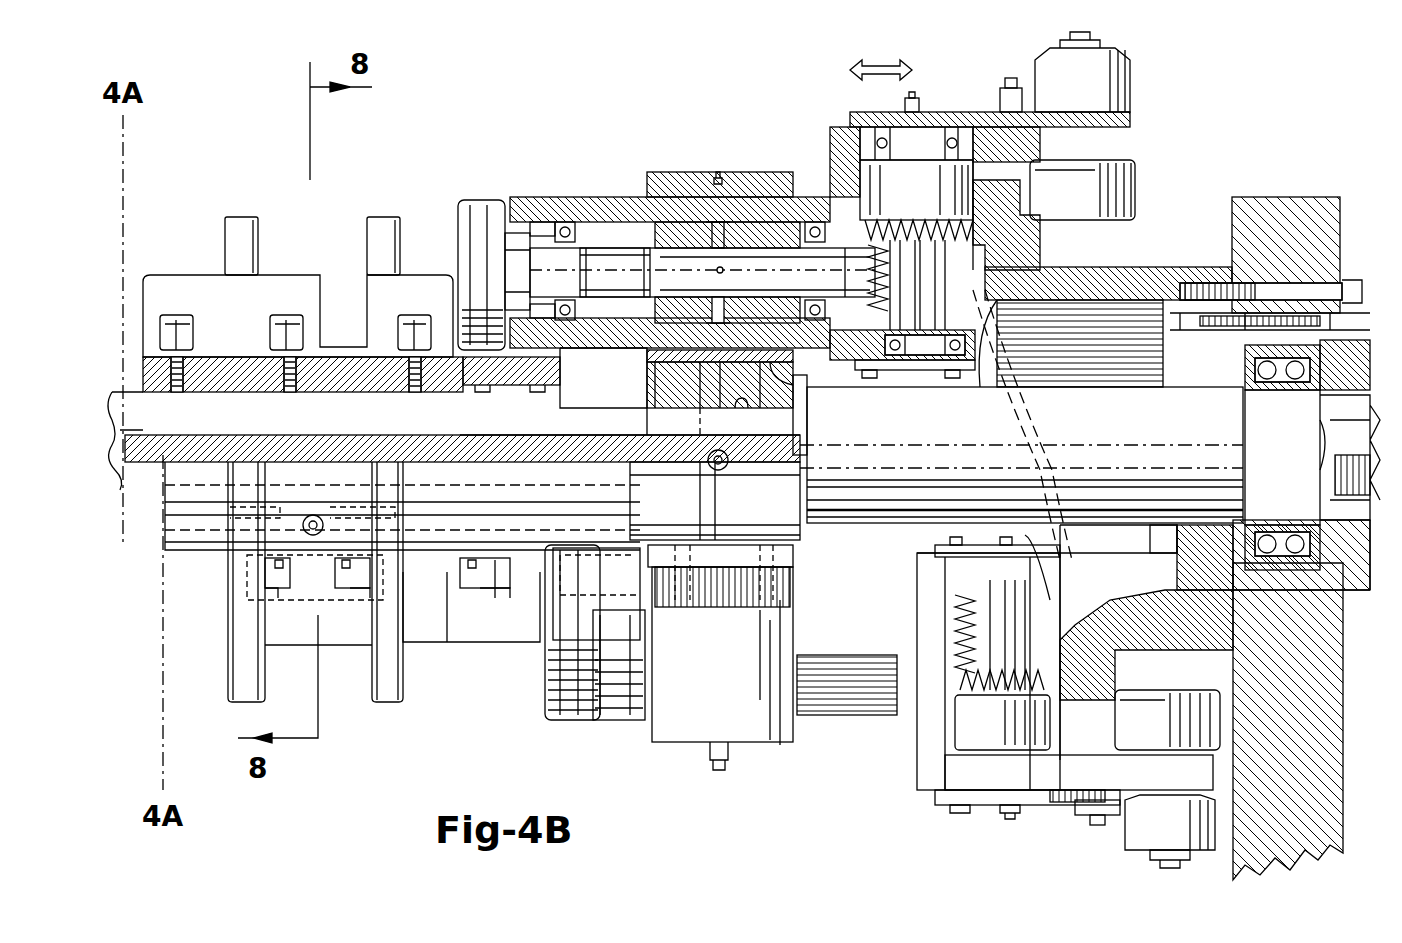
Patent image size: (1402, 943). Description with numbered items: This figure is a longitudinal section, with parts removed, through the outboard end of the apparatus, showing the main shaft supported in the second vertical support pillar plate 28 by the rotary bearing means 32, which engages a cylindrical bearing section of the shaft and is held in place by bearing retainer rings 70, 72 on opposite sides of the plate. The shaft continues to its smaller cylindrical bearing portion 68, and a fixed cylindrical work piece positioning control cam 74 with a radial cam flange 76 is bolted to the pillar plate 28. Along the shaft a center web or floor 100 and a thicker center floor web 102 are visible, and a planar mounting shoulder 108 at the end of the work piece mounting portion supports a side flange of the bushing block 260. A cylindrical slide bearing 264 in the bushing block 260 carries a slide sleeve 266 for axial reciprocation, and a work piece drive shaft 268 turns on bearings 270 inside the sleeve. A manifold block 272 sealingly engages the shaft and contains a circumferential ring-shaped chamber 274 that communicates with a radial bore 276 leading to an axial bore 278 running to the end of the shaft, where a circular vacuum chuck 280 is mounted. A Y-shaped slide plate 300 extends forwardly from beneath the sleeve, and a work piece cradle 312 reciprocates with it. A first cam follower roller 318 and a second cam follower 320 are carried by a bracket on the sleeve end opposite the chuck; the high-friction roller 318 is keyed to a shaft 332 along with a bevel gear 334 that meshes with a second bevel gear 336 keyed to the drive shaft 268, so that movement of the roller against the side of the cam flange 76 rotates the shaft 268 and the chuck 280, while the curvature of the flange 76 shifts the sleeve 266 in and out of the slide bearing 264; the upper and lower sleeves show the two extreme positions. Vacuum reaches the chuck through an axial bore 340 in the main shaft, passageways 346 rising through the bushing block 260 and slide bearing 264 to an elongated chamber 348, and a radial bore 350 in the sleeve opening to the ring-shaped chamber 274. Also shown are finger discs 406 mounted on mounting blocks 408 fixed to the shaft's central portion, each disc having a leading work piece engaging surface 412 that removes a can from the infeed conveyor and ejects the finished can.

The second vertical support pillar plate 28 is at (1281, 197).
The rotary bearing means 32 is at (1245, 385).
The smaller cylindrical bearing portion 68 is at (1250, 431).
The bearing retainer ring 70 is at (1180, 573).
The bearing retainer ring 72 is at (1376, 586).
The fixed cylindrical work piece positioning control cam 74 is at (1141, 268).
The radial cam flange 76 is at (996, 192).
The center web or floor 100 is at (160, 440).
The thicker center floor web 102 is at (496, 440).
The planar mounting shoulder 108 is at (745, 408).
The bushing block 260 is at (647, 402).
The cylindrical slide bearing 264 is at (665, 172).
The slide sleeve 266 is at (603, 197).
The work piece drive shaft 268 is at (798, 275).
The bearings 270 is at (560, 222).
The manifold block 272 is at (655, 318).
The circumferential ring-shaped chamber 274 is at (712, 190).
The radial bore 276 is at (718, 270).
The axial bore 278 is at (505, 245).
The circular vacuum chuck 280 is at (478, 200).
The Y-shaped slide plate 300 is at (364, 393).
The work piece cradle 312 is at (262, 305).
The first cam follower roller 318 is at (838, 146).
The second cam follower 320 is at (1135, 190).
The shaft 332 is at (947, 127).
The bevel gear 334 is at (975, 236).
The second bevel gear 336 is at (958, 642).
The axial bore 340 is at (1152, 443).
The passageways 346 is at (700, 426).
The elongated chamber 348 is at (807, 402).
The radial bore 350 is at (647, 353).
The finger discs 406 is at (352, 680).
The mounting blocks 408 is at (345, 480).
The work piece engaging surface 412 is at (367, 238).